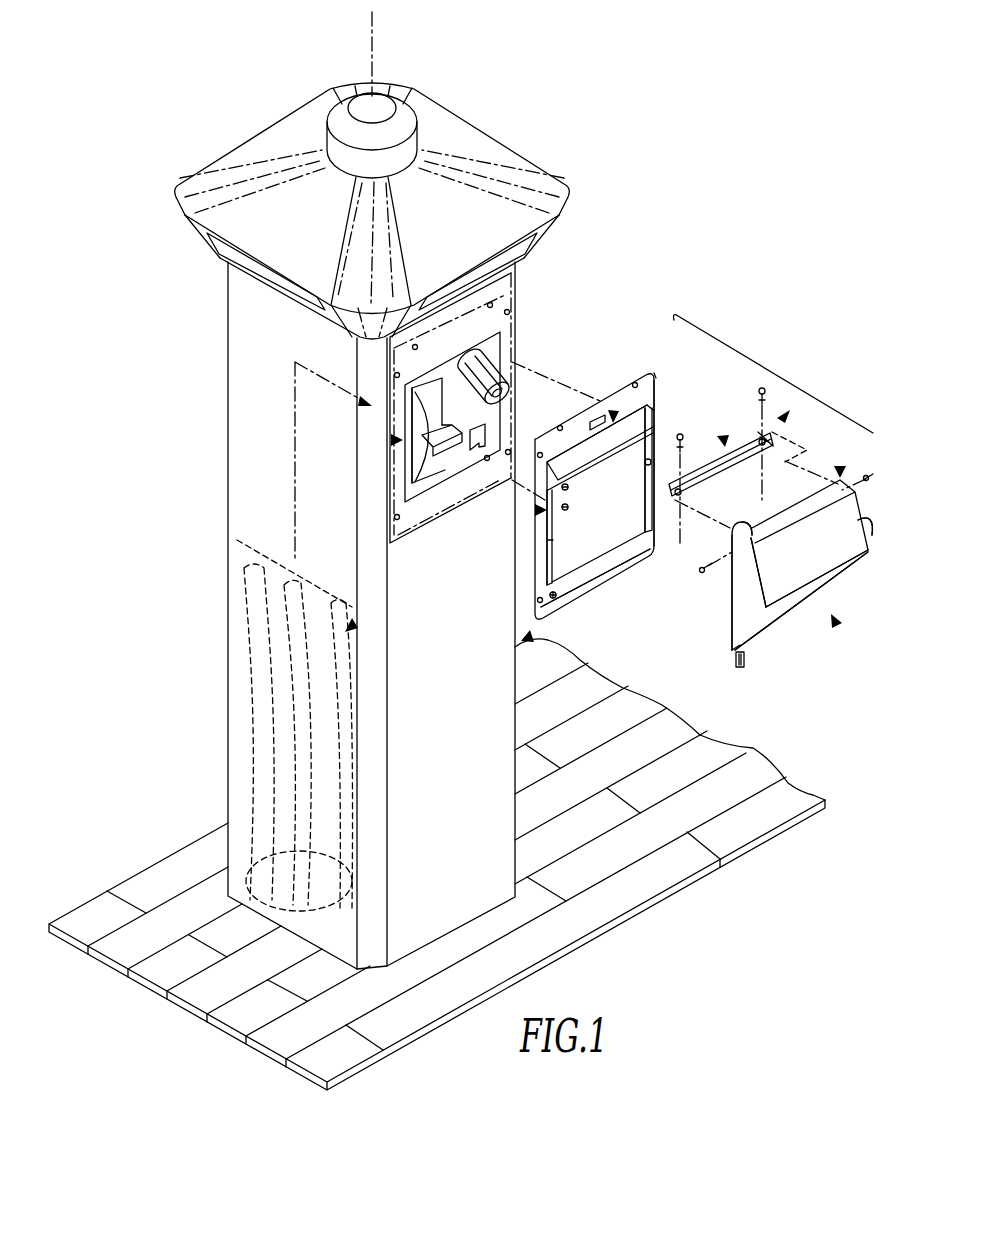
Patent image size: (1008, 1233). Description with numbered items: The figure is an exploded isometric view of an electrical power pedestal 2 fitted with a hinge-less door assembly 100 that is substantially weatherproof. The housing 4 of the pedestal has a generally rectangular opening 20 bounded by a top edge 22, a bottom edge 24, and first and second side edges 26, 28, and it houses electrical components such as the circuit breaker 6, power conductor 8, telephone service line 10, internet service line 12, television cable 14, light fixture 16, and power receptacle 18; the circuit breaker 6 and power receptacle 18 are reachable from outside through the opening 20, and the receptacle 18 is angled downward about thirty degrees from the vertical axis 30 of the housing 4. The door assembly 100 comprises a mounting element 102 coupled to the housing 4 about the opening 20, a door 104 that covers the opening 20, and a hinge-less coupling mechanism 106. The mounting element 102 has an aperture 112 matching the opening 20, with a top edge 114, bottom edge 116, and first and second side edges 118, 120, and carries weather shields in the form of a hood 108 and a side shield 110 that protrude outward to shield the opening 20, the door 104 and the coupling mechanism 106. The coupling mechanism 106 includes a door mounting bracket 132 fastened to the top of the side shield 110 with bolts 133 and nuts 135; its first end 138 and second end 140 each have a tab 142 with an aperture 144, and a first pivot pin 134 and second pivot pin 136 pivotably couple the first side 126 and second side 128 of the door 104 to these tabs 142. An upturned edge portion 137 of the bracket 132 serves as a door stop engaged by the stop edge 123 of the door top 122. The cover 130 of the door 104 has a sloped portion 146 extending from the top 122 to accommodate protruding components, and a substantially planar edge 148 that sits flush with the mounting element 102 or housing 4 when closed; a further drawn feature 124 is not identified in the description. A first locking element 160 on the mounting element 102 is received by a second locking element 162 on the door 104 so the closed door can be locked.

The electrical power pedestal 2 is at (194, 812).
The housing 4 is at (242, 373).
The circuit breaker 6 is at (412, 476).
The power conductor 8 is at (242, 578).
The telephone service line 10 is at (356, 603).
The internet service line 12 is at (352, 625).
The television cable 14 is at (318, 583).
The light fixture 16 is at (218, 257).
The power receptacle 18 is at (510, 385).
The opening 20 is at (394, 440).
The top edge 22 is at (496, 300).
The bottom edge 24 is at (440, 525).
The first side edge 26 is at (500, 340).
The second side edge 28 is at (400, 397).
The vertical axis 30 is at (372, 30).
The hinge-less door assembly 100 is at (786, 348).
The mounting element 102 is at (527, 636).
The door 104 is at (835, 626).
The hinge-less coupling mechanism 106 is at (723, 440).
The hood 108 is at (614, 413).
The side shield 110 is at (537, 510).
The aperture 112 is at (610, 543).
The top edge 114 is at (597, 470).
The bottom edge 116 is at (582, 565).
The first side edge 118 is at (632, 498).
The second side edge 120 is at (560, 545).
The top 122 is at (840, 468).
The stop edge 123 is at (756, 537).
The side edge 124 is at (760, 642).
The first side 126 is at (862, 533).
The second side 128 is at (738, 588).
The cover 130 is at (835, 600).
The door mounting bracket 132 is at (764, 470).
The bolts 133 is at (683, 437).
The first pivot pin 134 is at (869, 437).
The nuts 135 is at (571, 490).
The second pivot pin 136 is at (699, 574).
The upturned edge portion 137 is at (653, 460).
The first end 138 is at (786, 414).
The second end 140 is at (657, 370).
The tab 142 is at (792, 451).
The aperture 144 is at (752, 387).
The sloped portion 146 is at (790, 590).
The substantially planar edge 148 is at (728, 636).
The first locking element 160 is at (549, 595).
The second locking element 162 is at (742, 669).